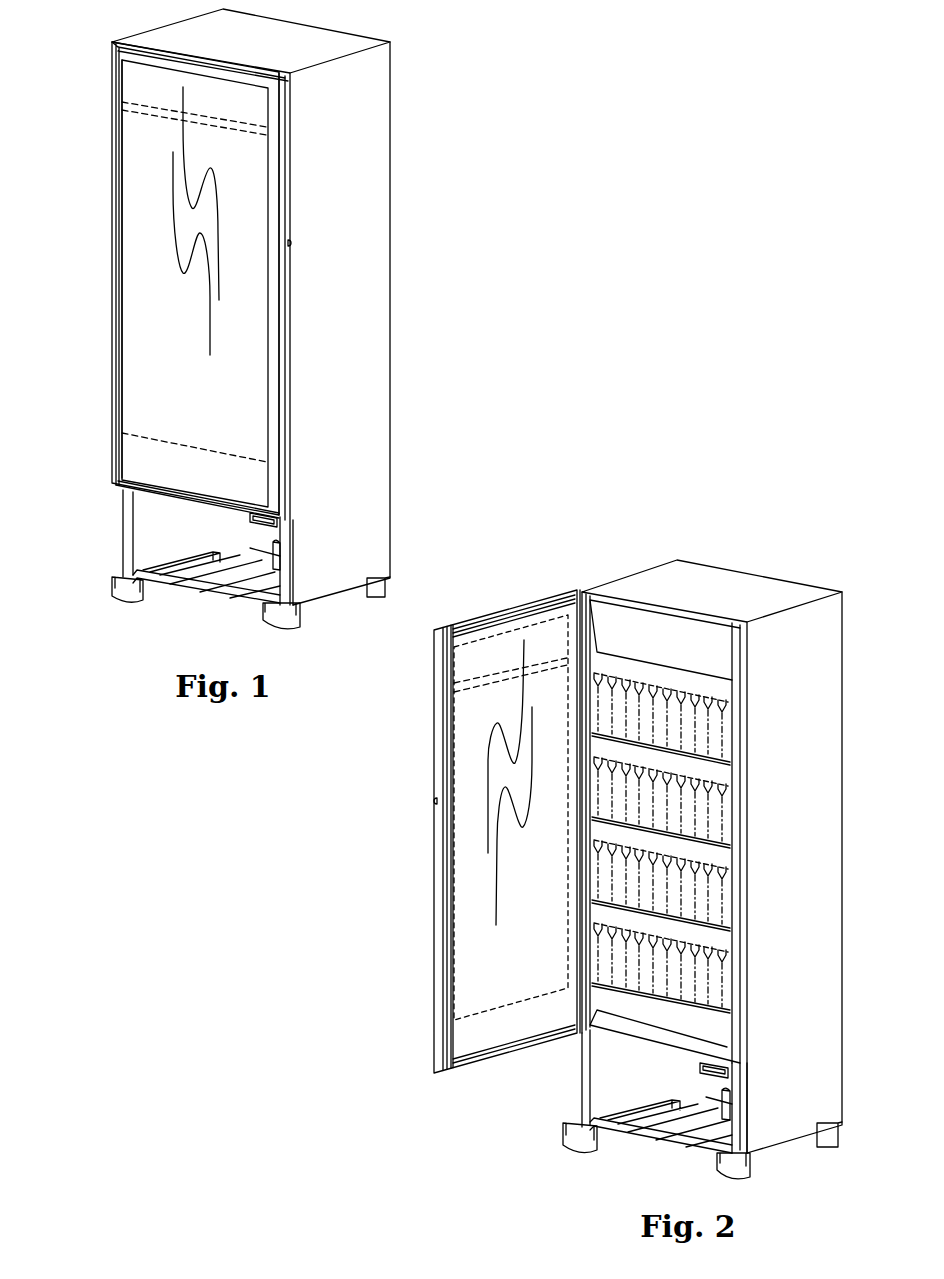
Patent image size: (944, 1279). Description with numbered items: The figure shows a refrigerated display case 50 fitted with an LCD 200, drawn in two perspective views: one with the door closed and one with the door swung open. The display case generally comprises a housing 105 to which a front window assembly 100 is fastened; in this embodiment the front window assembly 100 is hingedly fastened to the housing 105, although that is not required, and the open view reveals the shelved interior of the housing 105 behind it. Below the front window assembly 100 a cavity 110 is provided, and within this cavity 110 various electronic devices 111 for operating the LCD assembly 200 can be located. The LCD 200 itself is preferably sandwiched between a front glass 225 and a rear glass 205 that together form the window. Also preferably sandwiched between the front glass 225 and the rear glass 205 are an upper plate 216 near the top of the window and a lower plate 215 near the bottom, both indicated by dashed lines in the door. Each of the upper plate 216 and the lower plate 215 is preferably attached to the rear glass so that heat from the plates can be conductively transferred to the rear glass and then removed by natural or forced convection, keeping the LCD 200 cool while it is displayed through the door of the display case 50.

In FIG. 1, the refrigerated display case 50 is at (490, 97).
In FIG. 2, the refrigerated display case 50 is at (722, 490).
In FIG. 1, the front window assembly 100 is at (254, 280).
In FIG. 2, the front window assembly 100 is at (483, 802).
In FIG. 1, the housing 105 is at (380, 80).
In FIG. 2, the housing 105 is at (748, 587).
In FIG. 1, the cavity 110 is at (202, 570).
In FIG. 2, the cavity 110 is at (655, 1112).
In FIG. 1, the electronic devices 111 is at (268, 545).
In FIG. 2, the electronic devices 111 is at (715, 1075).
In FIG. 1, the LCD 200 is at (150, 162).
In FIG. 2, the LCD 200 is at (475, 818).
In FIG. 2, the rear glass 205 is at (478, 940).
In FIG. 1, the lower plate 215 is at (133, 465).
In FIG. 2, the lower plate 215 is at (478, 1032).
In FIG. 1, the upper plate 216 is at (135, 80).
In FIG. 2, the upper plate 216 is at (478, 652).
In FIG. 1, the front glass 225 is at (135, 190).